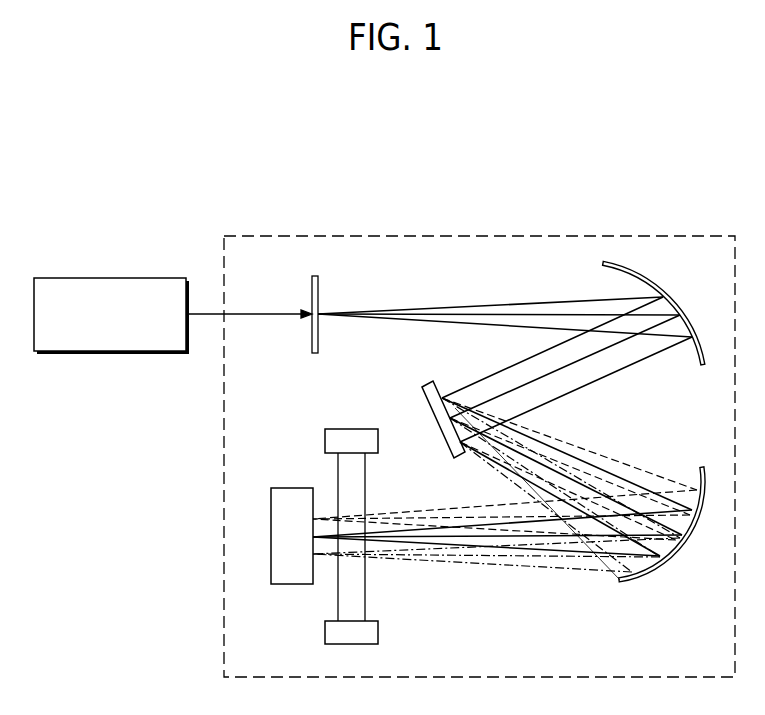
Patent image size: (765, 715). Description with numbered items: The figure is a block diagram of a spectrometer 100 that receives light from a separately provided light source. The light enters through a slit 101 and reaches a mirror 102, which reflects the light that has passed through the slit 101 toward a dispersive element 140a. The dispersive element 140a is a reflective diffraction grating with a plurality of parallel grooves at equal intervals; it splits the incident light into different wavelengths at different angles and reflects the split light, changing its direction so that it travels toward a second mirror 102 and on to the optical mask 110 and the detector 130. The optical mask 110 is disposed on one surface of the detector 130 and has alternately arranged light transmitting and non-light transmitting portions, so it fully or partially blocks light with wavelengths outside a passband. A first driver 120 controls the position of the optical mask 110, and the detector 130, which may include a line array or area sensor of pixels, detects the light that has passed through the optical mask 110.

The spectrometer 100 is at (543, 236).
The slit 101 is at (318, 293).
The mirror 102 is at (650, 272).
The dispersive element 140a is at (422, 387).
The optical mask 110 is at (365, 497).
The first driver 120 is at (335, 429).
The detector 130 is at (290, 584).